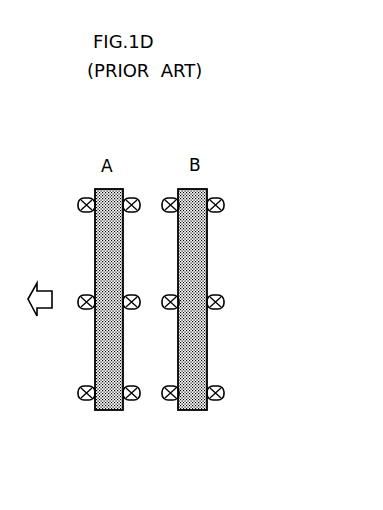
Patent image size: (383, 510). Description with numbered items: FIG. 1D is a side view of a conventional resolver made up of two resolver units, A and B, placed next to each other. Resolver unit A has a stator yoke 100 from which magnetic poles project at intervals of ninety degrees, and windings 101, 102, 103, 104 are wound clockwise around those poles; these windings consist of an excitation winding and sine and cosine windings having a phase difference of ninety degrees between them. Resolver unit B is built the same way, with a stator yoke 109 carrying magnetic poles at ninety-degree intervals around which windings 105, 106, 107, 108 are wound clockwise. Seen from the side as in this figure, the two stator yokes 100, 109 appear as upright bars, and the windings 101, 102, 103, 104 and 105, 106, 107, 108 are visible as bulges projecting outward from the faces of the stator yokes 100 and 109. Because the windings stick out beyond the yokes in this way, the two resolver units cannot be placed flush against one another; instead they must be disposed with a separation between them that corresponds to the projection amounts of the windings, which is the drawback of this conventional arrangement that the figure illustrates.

The stator yoke 100 is at (102, 410).
The winding 101 is at (87, 201).
The winding 102 is at (37, 268).
The winding 103 is at (84, 389).
The winding 104 is at (84, 297).
The winding 105 is at (223, 203).
The winding 106 is at (223, 271).
The winding 107 is at (223, 393).
The winding 108 is at (223, 300).
The stator yoke 109 is at (193, 410).